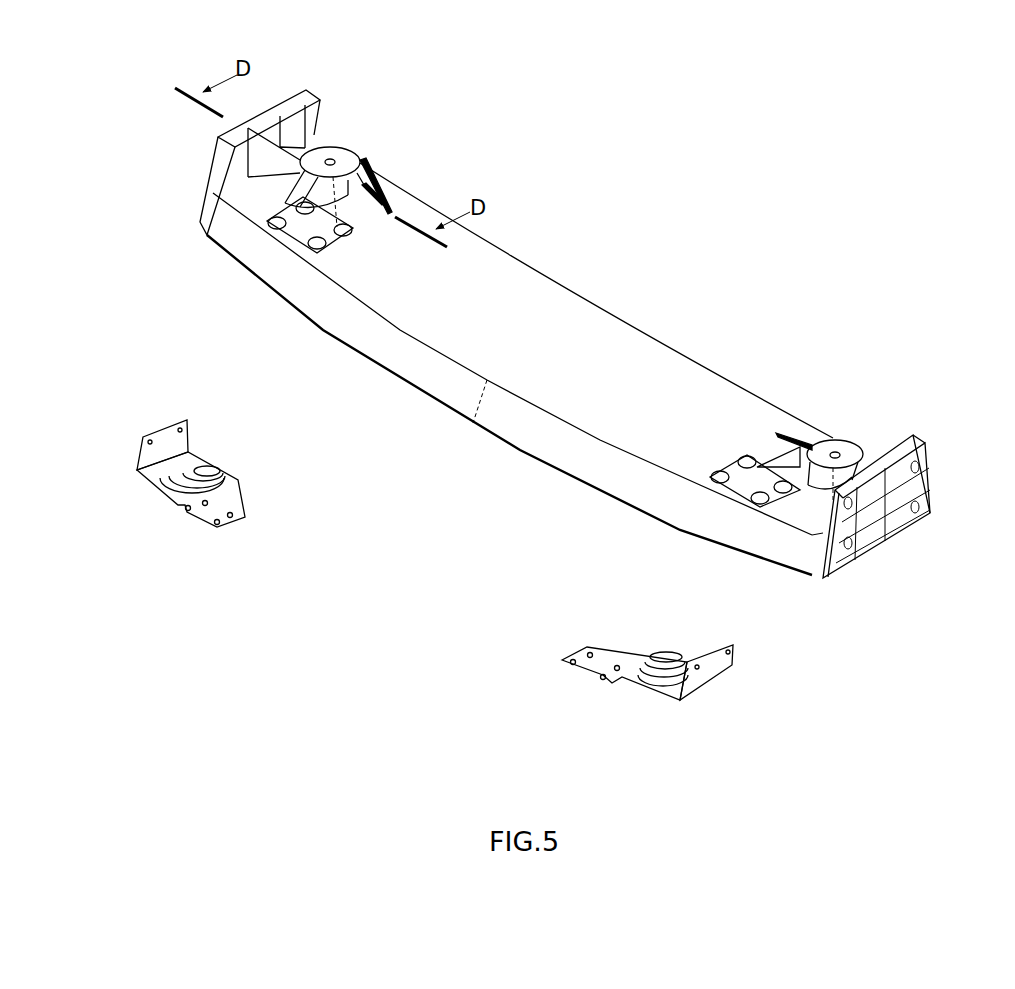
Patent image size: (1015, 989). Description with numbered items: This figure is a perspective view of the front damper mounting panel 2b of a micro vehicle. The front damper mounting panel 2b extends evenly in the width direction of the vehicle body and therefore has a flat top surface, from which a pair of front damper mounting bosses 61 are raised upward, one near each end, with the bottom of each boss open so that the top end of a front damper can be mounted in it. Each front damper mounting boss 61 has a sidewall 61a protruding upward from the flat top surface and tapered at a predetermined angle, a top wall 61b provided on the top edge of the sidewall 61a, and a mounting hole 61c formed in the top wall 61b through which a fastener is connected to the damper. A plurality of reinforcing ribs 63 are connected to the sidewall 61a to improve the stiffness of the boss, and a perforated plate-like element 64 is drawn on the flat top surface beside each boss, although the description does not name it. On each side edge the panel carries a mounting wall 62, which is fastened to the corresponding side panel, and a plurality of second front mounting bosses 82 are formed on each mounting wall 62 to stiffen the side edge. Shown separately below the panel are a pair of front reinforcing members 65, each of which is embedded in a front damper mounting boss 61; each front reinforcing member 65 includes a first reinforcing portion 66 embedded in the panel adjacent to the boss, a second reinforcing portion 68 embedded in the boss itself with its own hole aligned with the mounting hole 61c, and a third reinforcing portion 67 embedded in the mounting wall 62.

The front damper mounting panel 2b is at (635, 365).
The front damper mounting boss 61 is at (364, 128).
The sidewall 61a is at (300, 177).
The top wall 61b is at (355, 157).
The mounting hole 61c is at (333, 160).
The mounting wall 62 is at (217, 155).
The reinforcing rib 63 is at (263, 157).
The fastening plate 64 is at (313, 245).
The front reinforcing member 65 is at (462, 581).
The first reinforcing portion 66 is at (232, 498).
The third reinforcing portion 67 is at (167, 435).
The second reinforcing portion 68 is at (209, 457).
The second front mounting boss 82 is at (928, 515).